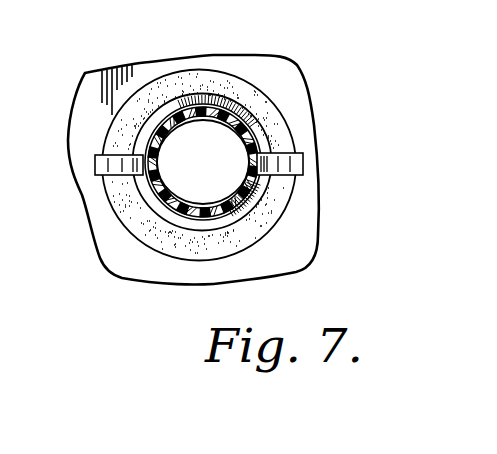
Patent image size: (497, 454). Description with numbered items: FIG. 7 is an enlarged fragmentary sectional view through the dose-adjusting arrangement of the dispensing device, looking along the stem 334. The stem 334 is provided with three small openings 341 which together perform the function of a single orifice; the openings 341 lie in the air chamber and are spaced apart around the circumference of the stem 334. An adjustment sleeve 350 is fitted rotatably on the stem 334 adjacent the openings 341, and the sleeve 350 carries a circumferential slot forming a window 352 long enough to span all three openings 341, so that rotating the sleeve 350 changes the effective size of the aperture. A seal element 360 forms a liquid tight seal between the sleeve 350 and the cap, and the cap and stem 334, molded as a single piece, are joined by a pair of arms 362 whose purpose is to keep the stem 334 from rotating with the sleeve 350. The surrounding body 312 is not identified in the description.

The housing body 312 is at (294, 91).
The stem 334 is at (218, 212).
The openings 341 is at (204, 112).
The adjustment sleeve 350 is at (152, 205).
The window 352 is at (205, 103).
The seal element 360 is at (183, 79).
The arms 362 is at (105, 162).